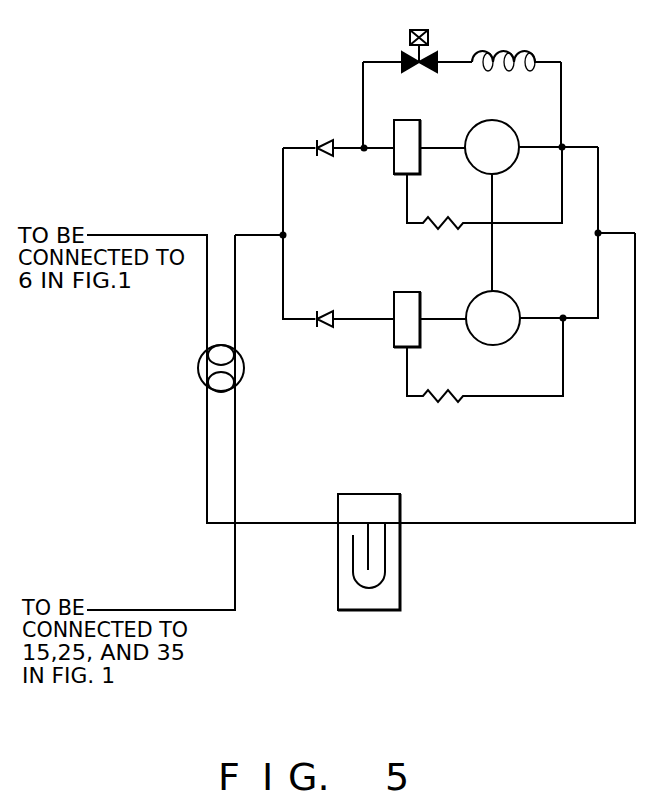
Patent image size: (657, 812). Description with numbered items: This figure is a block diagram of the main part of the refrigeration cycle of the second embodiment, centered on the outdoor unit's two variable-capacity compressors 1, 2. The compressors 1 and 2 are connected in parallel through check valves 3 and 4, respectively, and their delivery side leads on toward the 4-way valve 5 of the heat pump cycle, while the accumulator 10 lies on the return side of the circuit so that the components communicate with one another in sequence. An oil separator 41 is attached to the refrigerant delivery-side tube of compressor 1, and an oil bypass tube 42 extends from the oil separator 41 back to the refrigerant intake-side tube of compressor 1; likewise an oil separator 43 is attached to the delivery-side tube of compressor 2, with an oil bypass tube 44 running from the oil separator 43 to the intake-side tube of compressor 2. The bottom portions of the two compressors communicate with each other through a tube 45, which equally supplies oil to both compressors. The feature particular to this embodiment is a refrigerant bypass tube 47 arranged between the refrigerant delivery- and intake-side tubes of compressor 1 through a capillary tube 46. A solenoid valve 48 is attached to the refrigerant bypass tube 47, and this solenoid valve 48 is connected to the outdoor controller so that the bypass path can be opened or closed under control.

The variable-capacity compressor 1 is at (505, 130).
The variable-capacity compressor 2 is at (504, 306).
The check valve 3 is at (320, 140).
The check valve 4 is at (320, 310).
The 4-way valve 5 is at (244, 367).
The accumulator 10 is at (391, 597).
The oil separator 41 is at (393, 170).
The oil bypass tube 42 is at (530, 222).
The oil separator 43 is at (397, 340).
The oil bypass tube 44 is at (512, 398).
The tube 45 is at (492, 258).
The capillary tube 46 is at (515, 48).
The refrigerant bypass tube 47 is at (378, 60).
The solenoid valve 48 is at (432, 52).